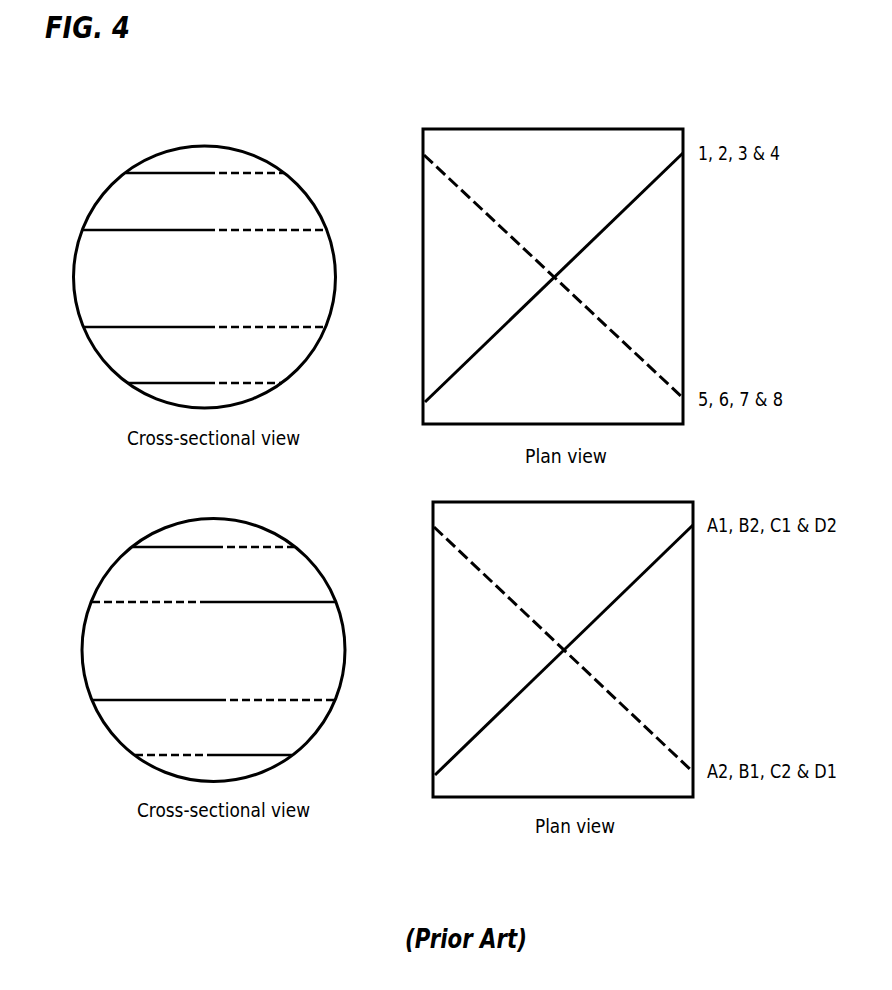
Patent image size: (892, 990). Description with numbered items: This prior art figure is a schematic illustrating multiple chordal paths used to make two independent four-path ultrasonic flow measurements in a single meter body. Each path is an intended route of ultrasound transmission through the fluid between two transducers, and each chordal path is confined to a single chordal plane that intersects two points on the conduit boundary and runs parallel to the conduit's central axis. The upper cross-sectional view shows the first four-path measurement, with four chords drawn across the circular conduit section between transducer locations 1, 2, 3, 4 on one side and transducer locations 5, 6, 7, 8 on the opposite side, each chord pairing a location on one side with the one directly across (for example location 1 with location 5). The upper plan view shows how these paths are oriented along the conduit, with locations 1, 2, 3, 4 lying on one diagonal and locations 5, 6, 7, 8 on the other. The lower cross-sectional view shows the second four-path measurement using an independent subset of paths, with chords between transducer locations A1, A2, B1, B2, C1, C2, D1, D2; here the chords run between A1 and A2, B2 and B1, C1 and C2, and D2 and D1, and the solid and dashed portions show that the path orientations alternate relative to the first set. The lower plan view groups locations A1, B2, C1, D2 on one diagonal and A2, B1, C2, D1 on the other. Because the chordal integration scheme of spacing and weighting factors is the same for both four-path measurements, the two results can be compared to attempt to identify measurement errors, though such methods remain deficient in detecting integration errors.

The first scan line start position 1 is at (152, 176).
The second scan line start position 2 is at (133, 233).
The third scan line start position 3 is at (133, 330).
The fourth scan line start position 4 is at (152, 386).
The first scan line end position 5 is at (260, 176).
The second scan line end position 6 is at (278, 233).
The third scan line end position 7 is at (278, 330).
The fourth scan line end position 8 is at (260, 386).
The scan line A start position A1 is at (156, 549).
The scan line A end position A2 is at (275, 549).
The scan line B end position B1 is at (288, 604).
The scan line B start position B2 is at (136, 604).
The scan line C start position C1 is at (143, 702).
The scan line C end position C2 is at (294, 702).
The scan line D end position D1 is at (275, 757).
The scan line D start position D2 is at (158, 757).